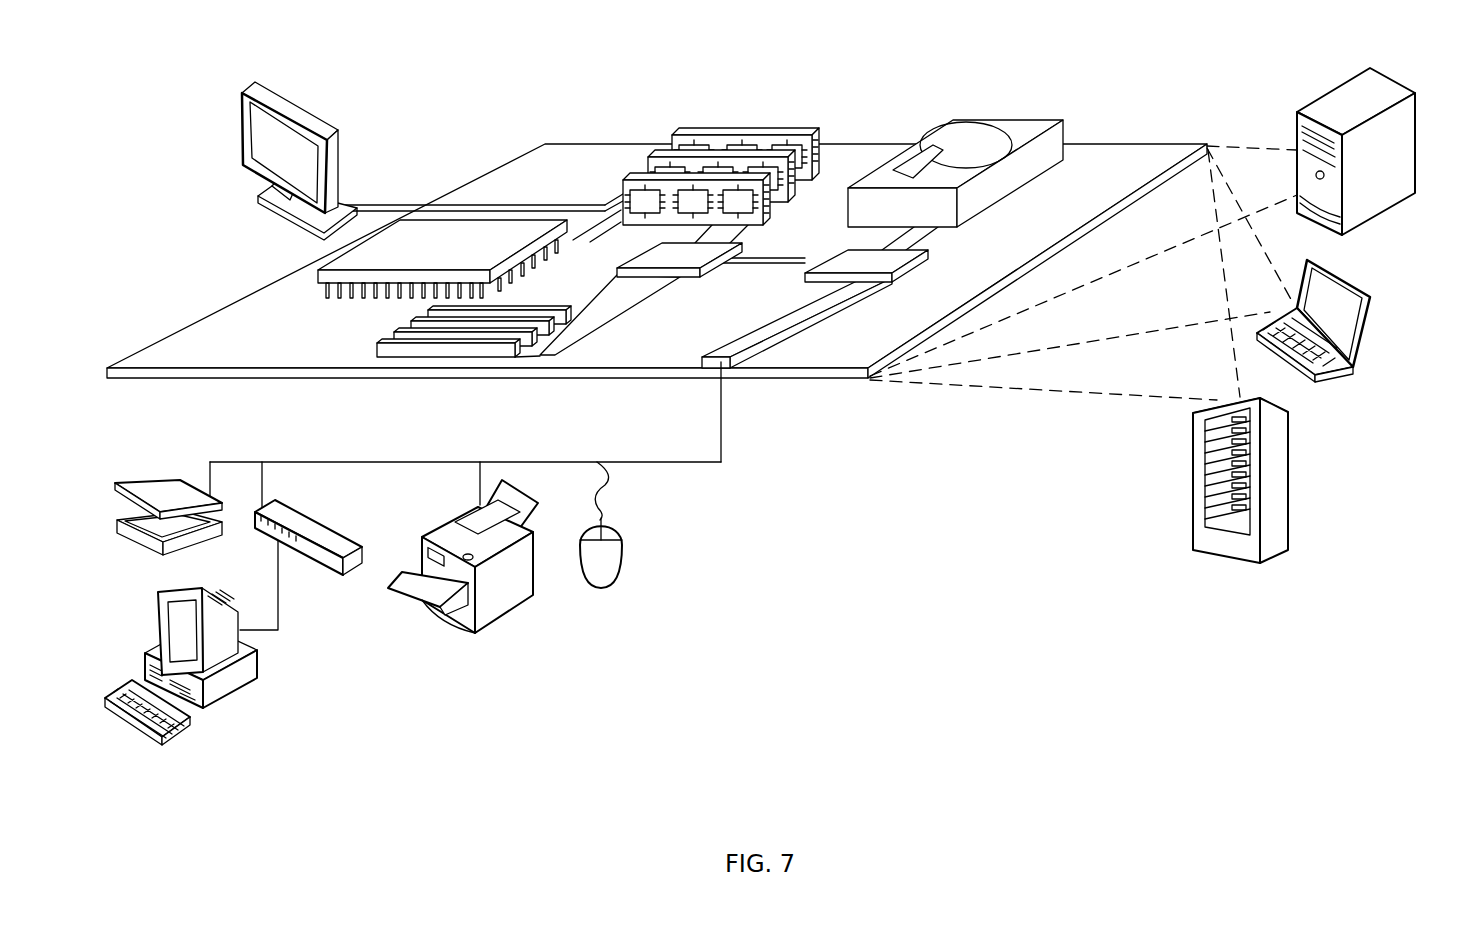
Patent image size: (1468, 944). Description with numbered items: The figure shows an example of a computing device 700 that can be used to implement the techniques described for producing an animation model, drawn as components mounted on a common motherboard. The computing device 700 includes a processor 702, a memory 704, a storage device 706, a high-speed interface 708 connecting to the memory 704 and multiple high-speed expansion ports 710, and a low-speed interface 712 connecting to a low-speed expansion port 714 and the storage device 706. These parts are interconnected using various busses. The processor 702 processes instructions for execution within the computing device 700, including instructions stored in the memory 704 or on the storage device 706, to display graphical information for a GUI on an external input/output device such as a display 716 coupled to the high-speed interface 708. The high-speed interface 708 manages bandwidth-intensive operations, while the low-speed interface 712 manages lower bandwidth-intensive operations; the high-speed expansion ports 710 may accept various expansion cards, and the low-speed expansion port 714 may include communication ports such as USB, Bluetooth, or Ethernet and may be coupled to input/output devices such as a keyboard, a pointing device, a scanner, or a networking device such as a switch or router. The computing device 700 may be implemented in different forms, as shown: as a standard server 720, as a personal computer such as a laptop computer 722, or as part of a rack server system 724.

The computing device 700 is at (459, 110).
The processor 702 is at (327, 275).
The memory 704 is at (695, 132).
The storage device 706 is at (950, 122).
The high-speed interface 708 is at (655, 258).
The high-speed expansion ports 710 is at (397, 336).
The low-speed interface 712 is at (847, 260).
The low-speed expansion port 714 is at (738, 372).
The display 716 is at (252, 80).
The standard server 720 is at (1297, 128).
The laptop computer 722 is at (1367, 292).
The rack server system 724 is at (1193, 508).